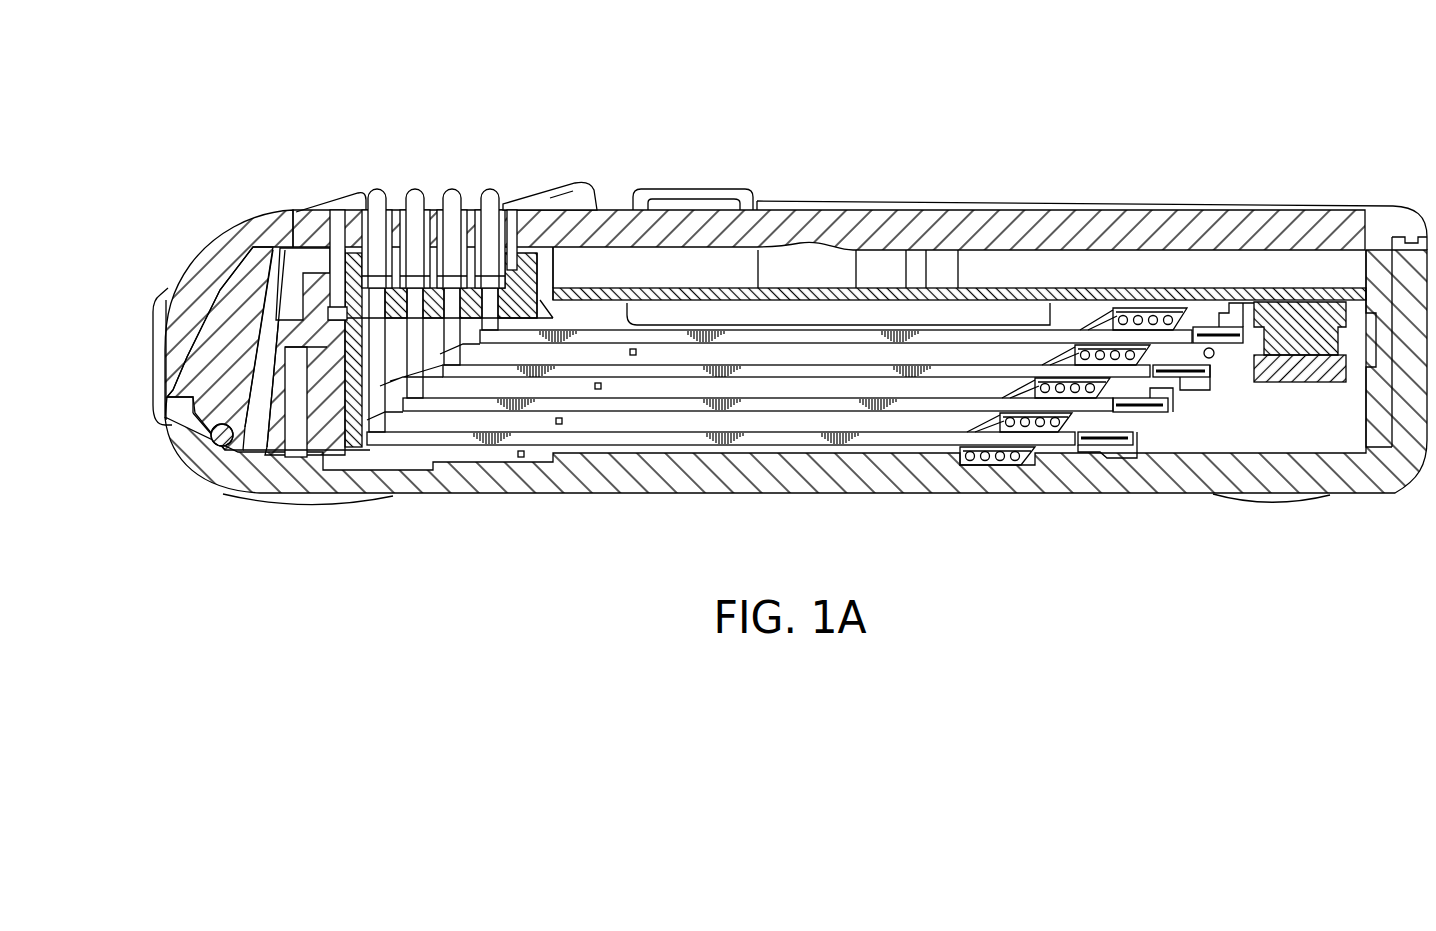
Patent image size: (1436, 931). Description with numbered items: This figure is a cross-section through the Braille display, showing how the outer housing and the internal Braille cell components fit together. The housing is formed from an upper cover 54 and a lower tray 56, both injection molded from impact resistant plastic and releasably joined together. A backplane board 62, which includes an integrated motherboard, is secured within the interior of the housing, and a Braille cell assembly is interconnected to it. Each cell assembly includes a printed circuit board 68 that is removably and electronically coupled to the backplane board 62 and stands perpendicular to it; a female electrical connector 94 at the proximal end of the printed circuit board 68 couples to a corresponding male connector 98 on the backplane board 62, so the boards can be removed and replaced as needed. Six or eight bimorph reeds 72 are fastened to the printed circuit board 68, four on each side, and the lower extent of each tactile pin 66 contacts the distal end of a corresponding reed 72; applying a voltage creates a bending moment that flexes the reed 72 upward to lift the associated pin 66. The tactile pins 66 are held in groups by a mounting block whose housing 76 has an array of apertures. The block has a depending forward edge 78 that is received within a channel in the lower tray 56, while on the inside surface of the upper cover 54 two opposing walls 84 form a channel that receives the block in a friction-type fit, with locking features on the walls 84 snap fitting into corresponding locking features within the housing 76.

The upper cover 54 is at (947, 222).
The lower tray 56 is at (993, 470).
The backplane board 62 is at (1043, 294).
The tactile pins 66 is at (375, 187).
The printed circuit board 68 is at (1195, 435).
The bimorph reeds 72 is at (693, 405).
The housing 76 is at (347, 262).
The depending forward edge 78 is at (353, 378).
The walls 84 is at (338, 262).
The female electrical connector 94 is at (1297, 378).
The male connector 98 is at (1296, 318).